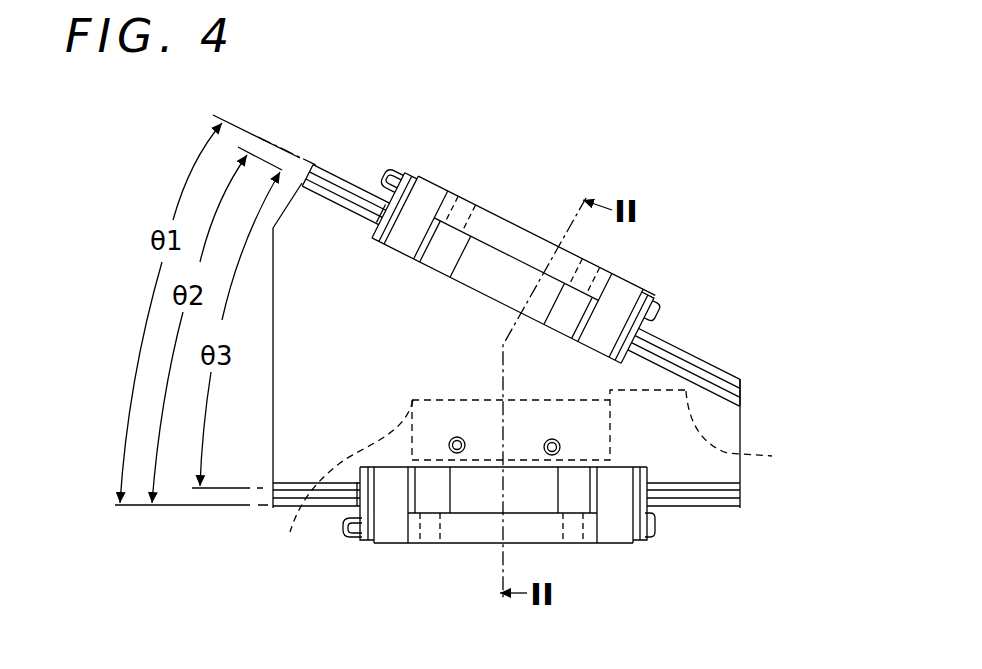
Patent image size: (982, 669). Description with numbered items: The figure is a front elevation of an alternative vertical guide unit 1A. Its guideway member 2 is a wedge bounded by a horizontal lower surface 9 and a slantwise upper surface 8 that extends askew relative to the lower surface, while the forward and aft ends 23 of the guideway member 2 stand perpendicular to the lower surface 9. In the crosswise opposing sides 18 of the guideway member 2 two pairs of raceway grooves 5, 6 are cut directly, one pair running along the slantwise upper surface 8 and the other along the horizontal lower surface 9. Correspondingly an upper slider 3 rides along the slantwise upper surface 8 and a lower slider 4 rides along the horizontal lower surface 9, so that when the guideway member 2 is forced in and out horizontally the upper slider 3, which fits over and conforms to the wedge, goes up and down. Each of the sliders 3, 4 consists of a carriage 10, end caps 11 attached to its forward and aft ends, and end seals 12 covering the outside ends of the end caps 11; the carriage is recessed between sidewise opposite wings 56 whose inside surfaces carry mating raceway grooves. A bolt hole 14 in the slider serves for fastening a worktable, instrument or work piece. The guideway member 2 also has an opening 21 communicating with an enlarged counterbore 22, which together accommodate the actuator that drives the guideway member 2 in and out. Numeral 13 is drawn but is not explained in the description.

The vertical guide unit 1A is at (563, 207).
The guideway member 2 is at (330, 255).
The upper slider 3 is at (502, 235).
The lower slider 4 is at (468, 537).
The raceway grooves 5 is at (345, 170).
The raceway grooves 6 is at (275, 508).
The slantwise upper surface 8 is at (357, 183).
The horizontal lower surface 9 is at (328, 508).
The carriage 10 is at (580, 253).
The end caps 11 is at (423, 200).
The end seals 12 is at (376, 200).
The ferrule sleeve 13 is at (490, 217).
The bolt hole 14 is at (470, 210).
The opposing sides 18 is at (372, 362).
The opening 21 is at (339, 484).
The counterbore 22 is at (747, 433).
The forward and aft ends 23 is at (272, 371).
The wings 56 is at (482, 280).